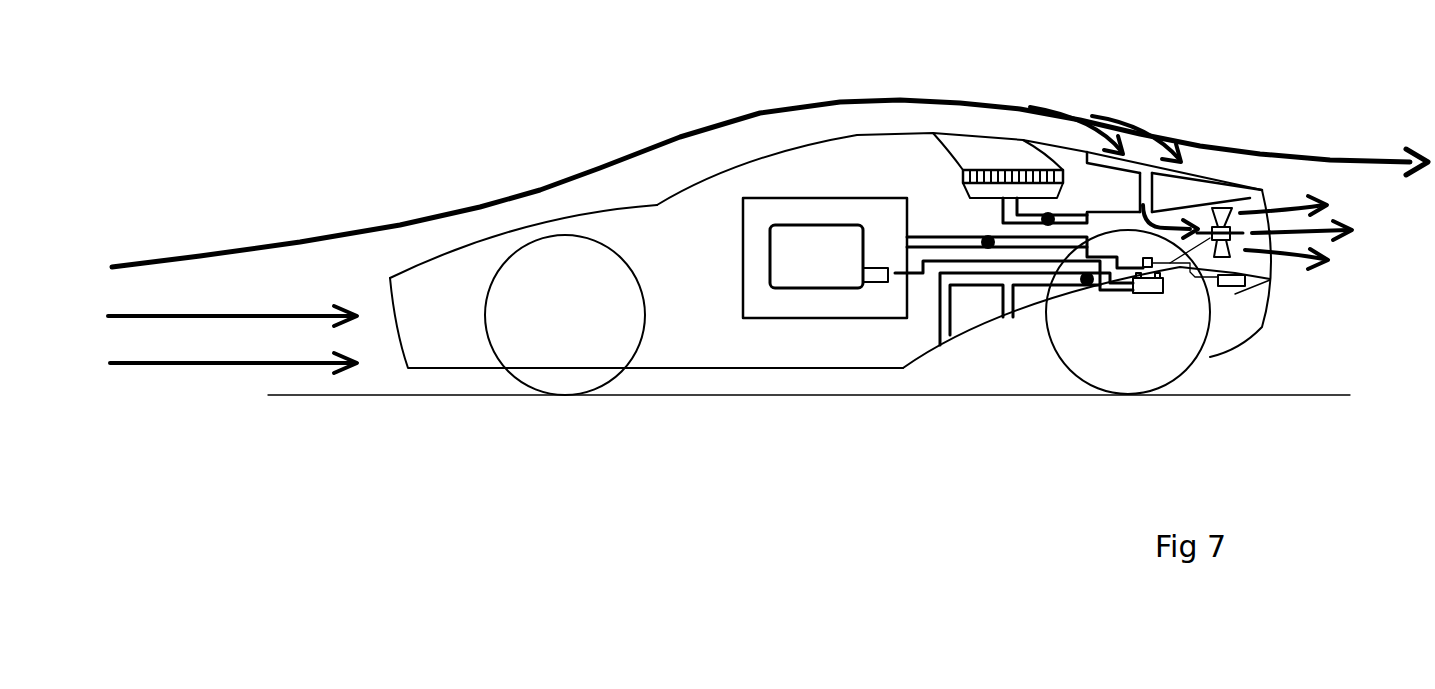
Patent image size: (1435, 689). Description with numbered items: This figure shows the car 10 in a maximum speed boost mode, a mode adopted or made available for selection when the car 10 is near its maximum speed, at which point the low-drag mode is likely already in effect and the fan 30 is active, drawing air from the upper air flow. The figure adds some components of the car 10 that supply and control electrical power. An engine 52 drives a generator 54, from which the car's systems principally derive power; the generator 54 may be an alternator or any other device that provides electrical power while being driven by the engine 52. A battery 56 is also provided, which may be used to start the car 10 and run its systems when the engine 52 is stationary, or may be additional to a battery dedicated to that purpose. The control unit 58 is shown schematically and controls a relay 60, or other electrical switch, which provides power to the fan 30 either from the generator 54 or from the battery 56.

The car 10 is at (718, 172).
The fan 30 is at (1223, 207).
The engine 52 is at (820, 225).
The generator 54 is at (877, 285).
The battery 56 is at (1143, 293).
The control unit 58 is at (1232, 290).
The relay 60 is at (1208, 265).